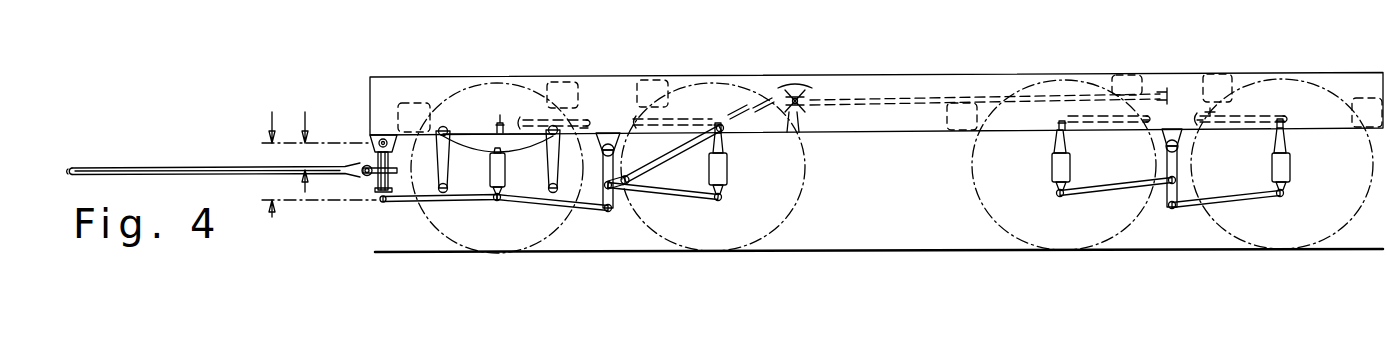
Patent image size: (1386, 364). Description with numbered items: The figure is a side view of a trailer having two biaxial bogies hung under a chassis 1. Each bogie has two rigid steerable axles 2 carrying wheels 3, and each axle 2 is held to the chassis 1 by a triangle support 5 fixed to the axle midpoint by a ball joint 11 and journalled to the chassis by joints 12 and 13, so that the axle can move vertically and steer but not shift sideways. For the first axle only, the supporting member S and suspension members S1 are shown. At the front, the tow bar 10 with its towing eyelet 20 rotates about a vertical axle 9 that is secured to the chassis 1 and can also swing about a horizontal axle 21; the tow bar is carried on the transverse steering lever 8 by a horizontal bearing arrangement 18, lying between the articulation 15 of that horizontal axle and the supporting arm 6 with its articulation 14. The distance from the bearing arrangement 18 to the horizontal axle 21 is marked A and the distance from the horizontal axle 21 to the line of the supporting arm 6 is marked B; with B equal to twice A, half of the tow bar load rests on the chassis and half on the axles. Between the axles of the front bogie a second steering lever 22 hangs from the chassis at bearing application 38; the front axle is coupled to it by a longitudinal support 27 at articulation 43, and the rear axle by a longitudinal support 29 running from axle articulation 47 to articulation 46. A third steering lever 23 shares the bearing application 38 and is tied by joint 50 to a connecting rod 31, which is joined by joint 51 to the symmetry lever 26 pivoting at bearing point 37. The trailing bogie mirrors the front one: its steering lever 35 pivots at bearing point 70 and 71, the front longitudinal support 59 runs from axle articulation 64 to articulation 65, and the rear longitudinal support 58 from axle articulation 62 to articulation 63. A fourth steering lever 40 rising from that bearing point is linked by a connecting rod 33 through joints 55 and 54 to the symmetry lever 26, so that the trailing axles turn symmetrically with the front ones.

The chassis 1 is at (866, 133).
The axle 2 is at (491, 168).
The wheel 3 is at (445, 244).
The triangle support 5 is at (508, 123).
The supporting arm 6 is at (440, 201).
The steering lever 8 is at (372, 191).
The vertical axle 9 is at (392, 170).
The tow bar 10 is at (212, 172).
The ball joint 11 is at (498, 122).
The joint 12 is at (580, 128).
The joint 13 is at (1172, 161).
The articulation 14 is at (497, 200).
The articulation 15 is at (383, 202).
The horizontal bearing arrangement 18 is at (361, 172).
The towing eyelet 20 is at (77, 172).
The horizontal axle 21 is at (370, 135).
The second steering lever 22 is at (605, 180).
The third steering lever 23 is at (640, 168).
The symmetry lever 26 is at (804, 88).
The longitudinal support 27 is at (568, 208).
The longitudinal support 29 is at (680, 190).
The connecting rod 31 is at (747, 105).
The connecting rod 33 is at (928, 95).
The steering lever 35 is at (1167, 212).
The bearing point 37 is at (806, 118).
The bearing application 38 is at (644, 103).
The fourth steering lever 40 is at (1172, 130).
The steering lever articulation 43 is at (608, 211).
The steering lever articulation 46 is at (625, 184).
The axle articulation 47 is at (721, 200).
The joint 50 is at (656, 176).
The joint 51 is at (786, 85).
The joint 54 is at (786, 112).
The joint 55 is at (1167, 98).
The longitudinal support 58 is at (1252, 198).
The longitudinal support 59 is at (1088, 190).
The axle articulation 62 is at (1287, 194).
The articulation 63 is at (1170, 203).
The axle articulation 64 is at (1057, 196).
The articulation 65 is at (1160, 185).
The bearing point 70 is at (1208, 115).
The bearing point 71 is at (1287, 60).
The supporting member S is at (505, 135).
The suspension member S1 is at (501, 178).
The distance A is at (294, 152).
The distance B is at (261, 164).